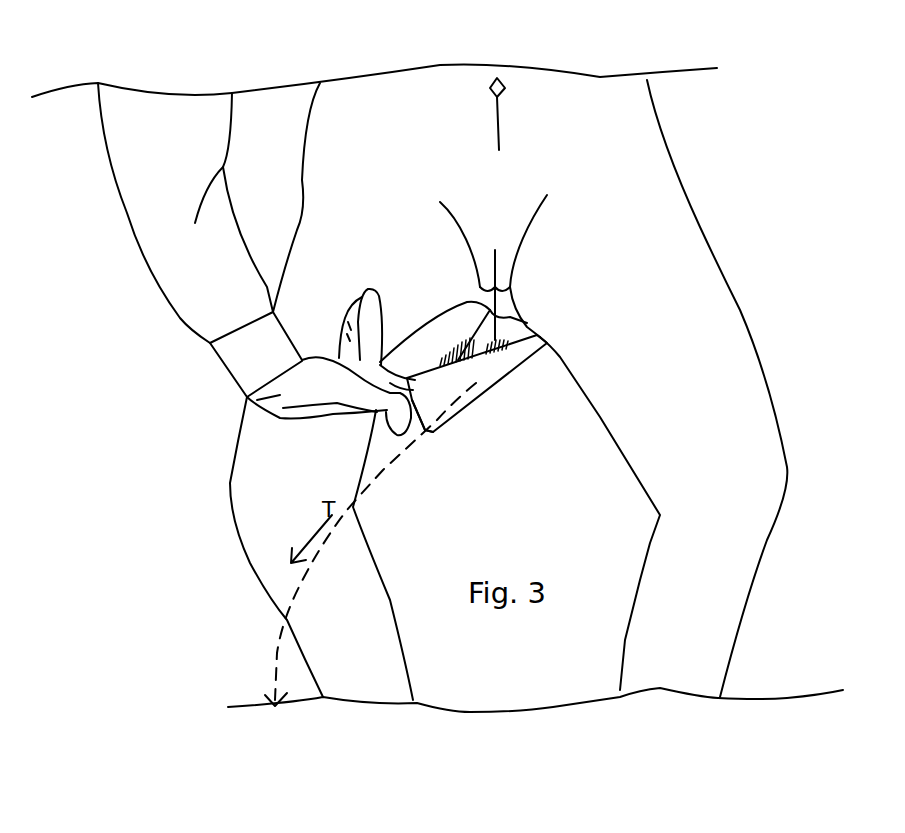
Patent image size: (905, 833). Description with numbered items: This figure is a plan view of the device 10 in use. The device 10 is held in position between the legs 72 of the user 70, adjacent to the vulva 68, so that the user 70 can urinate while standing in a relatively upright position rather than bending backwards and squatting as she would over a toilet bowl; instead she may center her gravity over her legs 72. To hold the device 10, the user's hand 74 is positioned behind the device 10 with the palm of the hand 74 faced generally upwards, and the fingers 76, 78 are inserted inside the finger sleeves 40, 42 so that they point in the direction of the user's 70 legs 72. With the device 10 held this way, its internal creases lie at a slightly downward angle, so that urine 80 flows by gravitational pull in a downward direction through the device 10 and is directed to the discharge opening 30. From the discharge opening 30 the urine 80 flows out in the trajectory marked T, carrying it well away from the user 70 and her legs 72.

The device 10 is at (490, 395).
The discharge opening 30 is at (427, 437).
The finger sleeve 40 is at (459, 385).
The finger sleeve 42 is at (435, 330).
The vulva 68 is at (505, 265).
The user 70 is at (625, 96).
The legs 72 is at (293, 528).
The hand 74 is at (270, 398).
The finger 76 is at (387, 412).
The finger 78 is at (380, 360).
The urine 80 is at (498, 302).